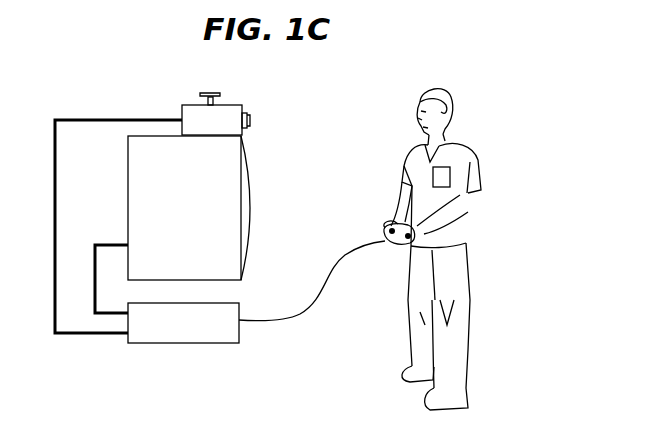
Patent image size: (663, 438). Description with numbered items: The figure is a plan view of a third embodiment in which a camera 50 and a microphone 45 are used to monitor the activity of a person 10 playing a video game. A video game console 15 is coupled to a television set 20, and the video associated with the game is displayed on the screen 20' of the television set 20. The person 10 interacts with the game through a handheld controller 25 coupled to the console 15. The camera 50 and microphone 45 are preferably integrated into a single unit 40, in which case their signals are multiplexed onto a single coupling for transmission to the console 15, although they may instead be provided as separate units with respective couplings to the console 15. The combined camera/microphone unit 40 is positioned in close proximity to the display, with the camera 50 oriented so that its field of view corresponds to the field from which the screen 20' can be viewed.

The person 10 is at (470, 147).
The video game console 15 is at (208, 343).
The television set 20 is at (216, 208).
The screen 20' is at (276, 208).
The handheld controller 25 is at (390, 247).
The single unit 40 is at (304, 100).
The microphone 45 is at (217, 95).
The camera 50 is at (188, 113).